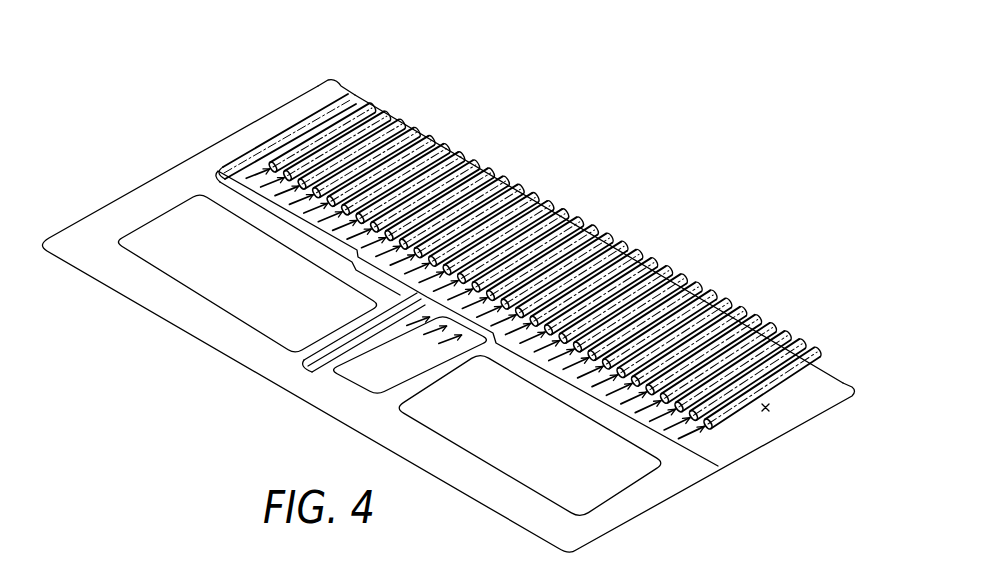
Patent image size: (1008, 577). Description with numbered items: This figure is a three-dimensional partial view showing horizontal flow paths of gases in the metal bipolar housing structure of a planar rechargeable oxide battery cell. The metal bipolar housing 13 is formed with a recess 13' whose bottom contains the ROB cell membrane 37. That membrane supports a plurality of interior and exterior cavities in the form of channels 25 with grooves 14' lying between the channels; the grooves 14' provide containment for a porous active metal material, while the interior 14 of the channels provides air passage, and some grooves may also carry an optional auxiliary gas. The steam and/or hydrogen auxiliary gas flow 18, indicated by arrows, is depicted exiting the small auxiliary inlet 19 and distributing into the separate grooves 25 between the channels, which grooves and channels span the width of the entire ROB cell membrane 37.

The metal bipolar housing 13 is at (448, 318).
The recess 13' is at (322, 213).
The interior of the channels 14 is at (503, 274).
The grooves 14' is at (426, 187).
The auxiliary gas flow 18 is at (398, 300).
The auxiliary inlet 19 is at (368, 380).
The channels 25 is at (800, 355).
The ROB cell membrane 37 is at (767, 410).